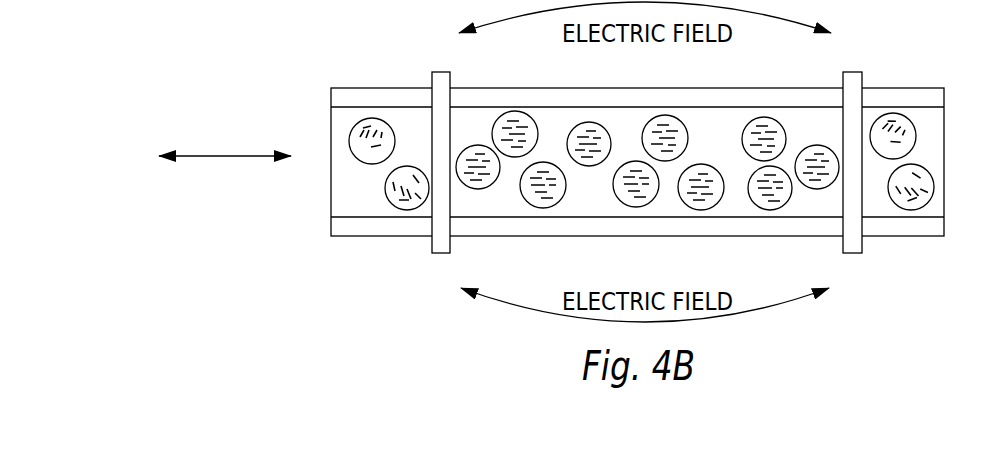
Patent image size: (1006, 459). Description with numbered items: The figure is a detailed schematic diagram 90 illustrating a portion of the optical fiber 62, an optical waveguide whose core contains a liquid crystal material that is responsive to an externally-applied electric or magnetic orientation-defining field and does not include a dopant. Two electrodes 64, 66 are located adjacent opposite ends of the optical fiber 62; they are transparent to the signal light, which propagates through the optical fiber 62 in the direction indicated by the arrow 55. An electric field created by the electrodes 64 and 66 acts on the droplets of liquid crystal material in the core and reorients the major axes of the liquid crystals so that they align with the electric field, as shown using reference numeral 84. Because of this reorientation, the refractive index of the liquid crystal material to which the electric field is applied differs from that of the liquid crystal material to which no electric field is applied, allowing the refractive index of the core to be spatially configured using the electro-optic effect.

The detailed schematic diagram 90 is at (583, 148).
The optical fiber 62 is at (278, 118).
The arrow 55 is at (223, 158).
The aligned liquid crystal major axes 84 is at (563, 116).
The electrode 64 is at (440, 254).
The electrode 66 is at (852, 254).